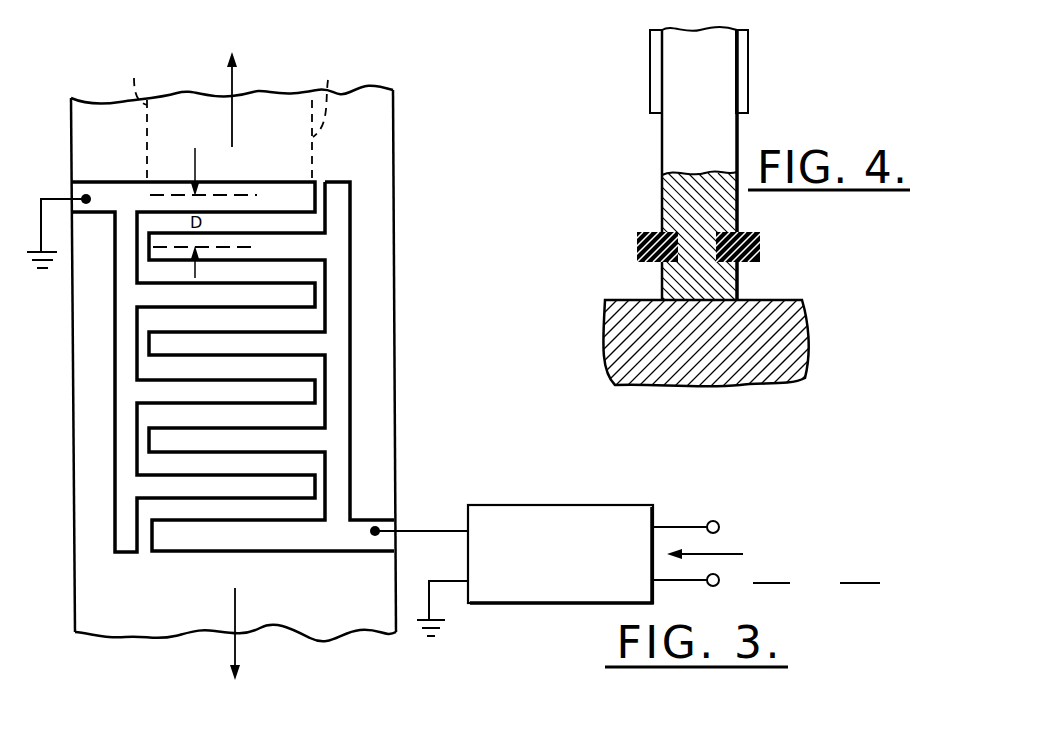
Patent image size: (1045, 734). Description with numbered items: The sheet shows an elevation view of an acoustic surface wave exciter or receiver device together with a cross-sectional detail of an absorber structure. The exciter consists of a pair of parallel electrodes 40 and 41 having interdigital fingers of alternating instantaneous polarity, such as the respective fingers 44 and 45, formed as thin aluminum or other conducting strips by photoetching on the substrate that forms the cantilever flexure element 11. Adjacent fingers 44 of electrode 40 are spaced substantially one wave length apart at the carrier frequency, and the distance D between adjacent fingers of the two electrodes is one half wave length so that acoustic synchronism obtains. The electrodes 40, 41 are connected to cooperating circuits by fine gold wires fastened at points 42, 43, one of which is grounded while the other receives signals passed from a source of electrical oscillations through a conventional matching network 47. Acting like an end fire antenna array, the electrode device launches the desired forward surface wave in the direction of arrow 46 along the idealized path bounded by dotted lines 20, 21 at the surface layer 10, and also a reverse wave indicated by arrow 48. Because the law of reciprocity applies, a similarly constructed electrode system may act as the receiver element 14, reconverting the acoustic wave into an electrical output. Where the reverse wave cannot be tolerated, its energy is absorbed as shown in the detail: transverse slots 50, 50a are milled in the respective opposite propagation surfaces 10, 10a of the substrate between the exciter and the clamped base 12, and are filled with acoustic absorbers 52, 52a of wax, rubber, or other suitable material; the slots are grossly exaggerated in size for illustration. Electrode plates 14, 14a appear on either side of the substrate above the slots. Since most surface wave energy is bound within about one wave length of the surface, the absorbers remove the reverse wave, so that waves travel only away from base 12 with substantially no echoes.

In FIG. 4, the surface layer 10 is at (737, 130).
In FIG. 4, the opposite propagation surface 10a is at (662, 153).
In FIG. 3, the cantilever flexure element 11 is at (90, 535).
In FIG. 4, the cantilever flexure element 11 is at (703, 42).
In FIG. 4, the base 12 is at (777, 298).
In FIG. 3, the receiver element 14 is at (362, 193).
In FIG. 4, the receiver element 14 is at (747, 75).
In FIG. 4, the transducer electrode plate 14a is at (650, 72).
In FIG. 3, the dotted line 20 is at (135, 82).
In FIG. 3, the dotted line 21 is at (338, 72).
In FIG. 3, the electrode 40 is at (123, 383).
In FIG. 3, the electrode 41 is at (340, 294).
In FIG. 3, the connection point 42 is at (108, 181).
In FIG. 3, the connection point 43 is at (373, 518).
In FIG. 3, the electrode finger 44 is at (317, 392).
In FIG. 3, the electrode finger 45 is at (307, 425).
In FIG. 3, the arrow 46 is at (235, 108).
In FIG. 3, the matching network 47 is at (572, 505).
In FIG. 3, the arrow 48 is at (235, 637).
In FIG. 4, the transverse slot 50 is at (706, 240).
In FIG. 4, the transverse slot 50a is at (688, 253).
In FIG. 4, the acoustic absorber 52 is at (760, 247).
In FIG. 4, the acoustic absorber 52a is at (637, 248).